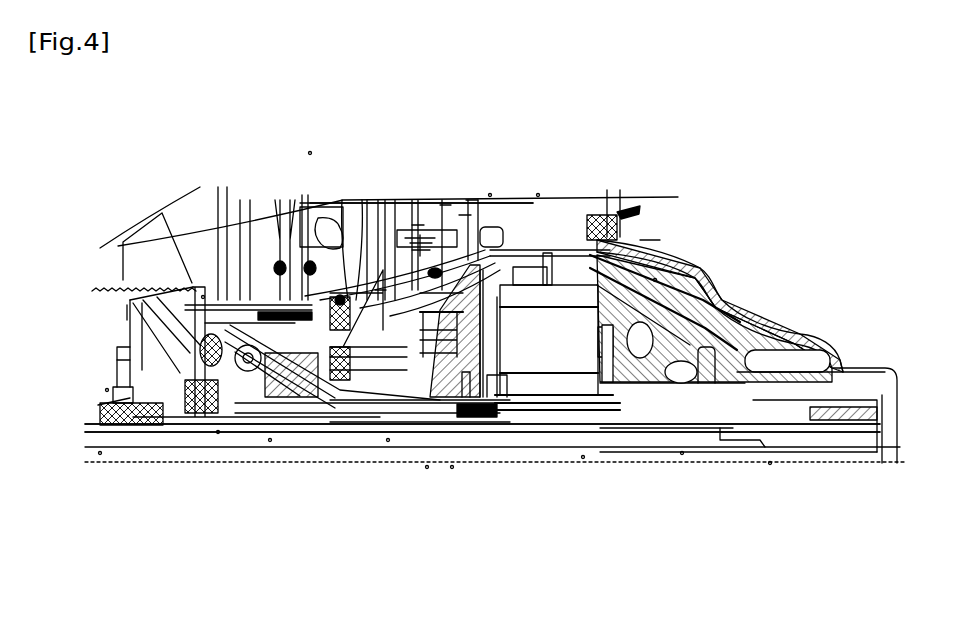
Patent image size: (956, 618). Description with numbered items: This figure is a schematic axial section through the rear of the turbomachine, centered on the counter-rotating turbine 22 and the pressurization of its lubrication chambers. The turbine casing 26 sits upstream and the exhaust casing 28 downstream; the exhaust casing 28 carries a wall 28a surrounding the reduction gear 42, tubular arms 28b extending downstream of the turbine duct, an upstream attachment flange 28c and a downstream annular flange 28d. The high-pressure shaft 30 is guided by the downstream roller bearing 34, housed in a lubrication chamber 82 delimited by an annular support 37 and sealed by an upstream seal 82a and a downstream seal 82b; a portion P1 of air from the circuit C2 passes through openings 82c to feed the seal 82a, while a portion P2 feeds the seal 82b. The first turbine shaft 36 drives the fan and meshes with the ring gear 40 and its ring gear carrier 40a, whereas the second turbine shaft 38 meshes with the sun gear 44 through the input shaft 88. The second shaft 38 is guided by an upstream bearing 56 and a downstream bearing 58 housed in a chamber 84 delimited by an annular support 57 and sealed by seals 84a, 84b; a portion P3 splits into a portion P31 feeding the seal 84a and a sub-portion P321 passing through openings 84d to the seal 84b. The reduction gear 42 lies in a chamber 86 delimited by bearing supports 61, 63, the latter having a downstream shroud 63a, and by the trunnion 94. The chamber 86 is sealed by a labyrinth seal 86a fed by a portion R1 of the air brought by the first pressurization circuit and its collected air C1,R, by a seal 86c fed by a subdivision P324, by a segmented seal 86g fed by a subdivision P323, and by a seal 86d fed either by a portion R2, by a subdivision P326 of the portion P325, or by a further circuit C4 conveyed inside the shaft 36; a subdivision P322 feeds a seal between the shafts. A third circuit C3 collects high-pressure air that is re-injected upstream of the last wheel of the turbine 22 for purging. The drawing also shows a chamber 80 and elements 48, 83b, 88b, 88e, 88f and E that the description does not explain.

The counter-rotating turbine 22 is at (312, 152).
The turbine casing 26 is at (152, 243).
The exhaust casing 28 is at (600, 124).
The wall 28a is at (585, 222).
The arms 28b is at (595, 183).
The upstream attachment flange 28c is at (472, 200).
The downstream annular flange 28d is at (593, 217).
The high-pressure shaft 30 is at (157, 433).
The downstream roller bearing 34 is at (187, 437).
The first turbine shaft 36 is at (297, 450).
The annular support 37 is at (127, 358).
The second turbine shaft 38 is at (363, 205).
The ring gear 40 is at (613, 240).
The ring gear carrier 40a is at (505, 205).
The mechanical reduction gear 42 is at (650, 240).
The sun gear 44 is at (578, 433).
The gear housing 48 is at (723, 310).
The upstream guide bearing 56 is at (258, 437).
The annular support 57 is at (238, 297).
The downstream guide bearing 58 is at (330, 443).
The bearing support 61 is at (465, 215).
The bearing support 63 is at (645, 273).
The downstream shroud 63a is at (800, 327).
The lubrication chamber 80 is at (127, 313).
The lubrication chamber 82 is at (173, 438).
The upstream seal 82a is at (140, 440).
The downstream seal 82b is at (250, 437).
The openings 82c is at (98, 407).
The bracket 83b is at (797, 433).
The lubrication chamber 84 is at (308, 440).
The upstream seal 84a is at (533, 447).
The downstream seal 84b is at (383, 447).
The openings 84d is at (425, 470).
The lubrication chamber 86 is at (700, 297).
The labyrinth seal 86a is at (437, 453).
The dynamic labyrinth seal 86c is at (628, 433).
The SRJ-type seal 86d is at (860, 390).
The segmented dynamic seal 86g is at (495, 457).
The input shaft 88 is at (522, 440).
The holder portion 88b is at (418, 225).
The holder portion 88e is at (445, 205).
The holder portion 88f is at (380, 290).
The trunnion 94 is at (723, 437).
The first pressurization circuit and collected air C1,R is at (538, 195).
The second pressurization circuit C2 is at (100, 453).
The third air circuit C3 is at (267, 300).
The fourth circuit C4 is at (682, 453).
The ground line E is at (820, 460).
The air portion P1 is at (107, 390).
The air portion P2 is at (218, 432).
The air portion P3 is at (173, 390).
The air portion P31 is at (203, 297).
The air sub-portion P321 is at (388, 440).
The air sub-portion P322 is at (427, 467).
The air sub-portion P323 is at (452, 467).
The air sub-portion P324 is at (583, 457).
The air sub-portion P325 is at (270, 440).
The air sub-portion P326 is at (770, 463).
The air portion R1 is at (490, 195).
The air portion R2 is at (655, 280).